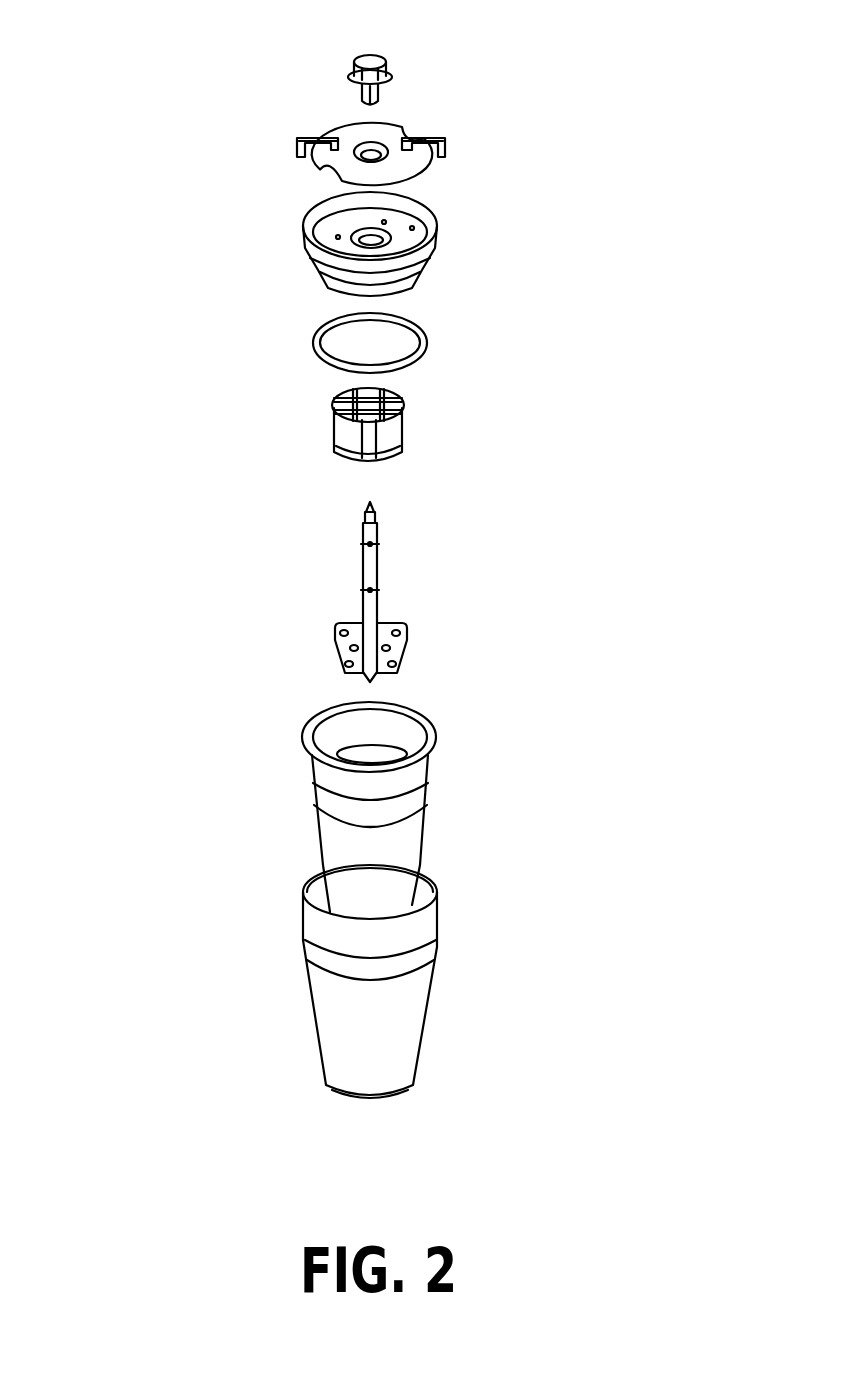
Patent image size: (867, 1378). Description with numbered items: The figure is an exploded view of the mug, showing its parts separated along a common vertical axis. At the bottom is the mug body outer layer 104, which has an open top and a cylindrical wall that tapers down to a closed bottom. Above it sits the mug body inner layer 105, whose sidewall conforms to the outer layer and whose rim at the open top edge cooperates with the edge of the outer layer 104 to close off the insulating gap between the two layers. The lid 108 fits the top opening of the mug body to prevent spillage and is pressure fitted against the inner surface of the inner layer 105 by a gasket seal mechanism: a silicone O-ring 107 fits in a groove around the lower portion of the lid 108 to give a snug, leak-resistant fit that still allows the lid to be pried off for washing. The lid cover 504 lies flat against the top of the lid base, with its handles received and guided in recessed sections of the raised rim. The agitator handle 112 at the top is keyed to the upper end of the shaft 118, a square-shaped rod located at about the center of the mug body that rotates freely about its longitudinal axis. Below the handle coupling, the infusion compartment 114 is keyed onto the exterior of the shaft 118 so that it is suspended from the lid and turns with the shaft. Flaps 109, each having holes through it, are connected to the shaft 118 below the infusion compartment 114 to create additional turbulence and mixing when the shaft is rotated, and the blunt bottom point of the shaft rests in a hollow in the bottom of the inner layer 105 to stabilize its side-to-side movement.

The agitator handle 112 is at (393, 73).
The lid cover 504 is at (293, 157).
The lid 108 is at (432, 262).
The O-ring 107 is at (323, 360).
The infusion compartment 114 is at (402, 457).
The shaft 118 is at (360, 572).
The flaps 109 is at (398, 650).
The mug body inner layer 105 is at (437, 752).
The mug body outer layer 104 is at (303, 933).